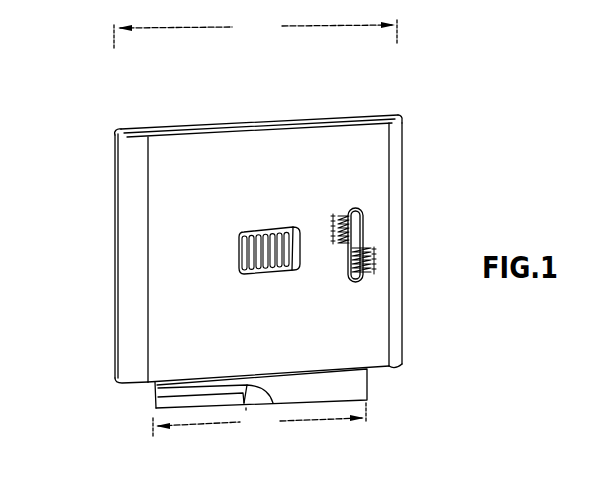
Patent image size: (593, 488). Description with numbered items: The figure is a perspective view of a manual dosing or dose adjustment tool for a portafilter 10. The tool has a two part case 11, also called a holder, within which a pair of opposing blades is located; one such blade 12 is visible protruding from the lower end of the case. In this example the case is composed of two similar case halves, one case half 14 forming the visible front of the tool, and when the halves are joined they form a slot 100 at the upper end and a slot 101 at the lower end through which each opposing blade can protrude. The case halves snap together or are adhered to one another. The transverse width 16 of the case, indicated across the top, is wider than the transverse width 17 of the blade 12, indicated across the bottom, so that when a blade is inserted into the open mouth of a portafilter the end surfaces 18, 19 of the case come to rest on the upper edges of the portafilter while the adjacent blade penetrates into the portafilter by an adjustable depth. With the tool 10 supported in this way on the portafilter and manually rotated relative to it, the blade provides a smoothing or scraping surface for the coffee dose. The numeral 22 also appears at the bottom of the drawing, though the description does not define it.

The dosing tool for a portafilter 10 is at (423, 147).
The two part case 11 is at (157, 192).
The blade 12 is at (355, 382).
The case half 14 is at (263, 163).
The transverse width of the case 16 is at (255, 32).
The transverse width of the blade 17 is at (259, 420).
The end surface of the case 18 is at (137, 129).
The end surface of the case 19 is at (380, 114).
The bottom opening 22 is at (245, 448).
The slot 100 is at (188, 127).
The slot 101 is at (149, 383).